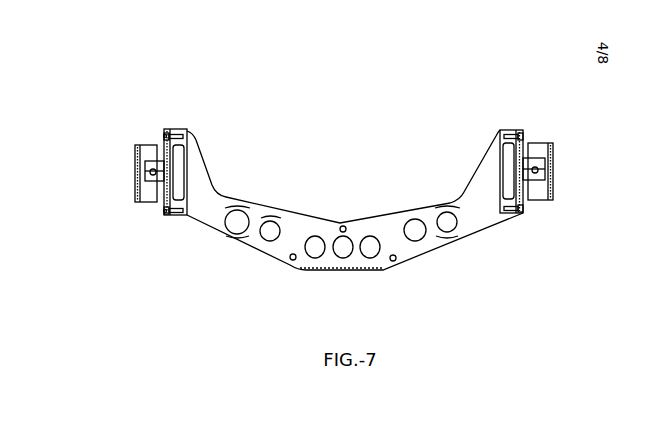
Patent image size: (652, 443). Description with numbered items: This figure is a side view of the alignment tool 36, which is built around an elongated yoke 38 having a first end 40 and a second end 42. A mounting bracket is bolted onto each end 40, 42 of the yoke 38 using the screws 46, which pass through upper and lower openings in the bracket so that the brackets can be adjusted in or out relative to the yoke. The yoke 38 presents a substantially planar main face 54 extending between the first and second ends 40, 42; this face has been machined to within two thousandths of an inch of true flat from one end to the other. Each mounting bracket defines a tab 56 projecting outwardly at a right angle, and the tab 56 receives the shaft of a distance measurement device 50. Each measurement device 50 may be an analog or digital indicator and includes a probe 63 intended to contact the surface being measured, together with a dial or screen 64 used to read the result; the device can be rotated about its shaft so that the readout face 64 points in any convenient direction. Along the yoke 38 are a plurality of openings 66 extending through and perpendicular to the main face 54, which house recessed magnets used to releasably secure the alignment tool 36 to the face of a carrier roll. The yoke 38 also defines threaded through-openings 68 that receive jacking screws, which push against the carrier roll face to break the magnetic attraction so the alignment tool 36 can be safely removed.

The alignment tool 36 is at (340, 128).
The elongated yoke 38 is at (283, 203).
The first end 40 is at (170, 132).
The second end 42 is at (512, 129).
The screws 46 is at (165, 135).
The distance measurement device 50 is at (143, 145).
The planar main face 54 is at (374, 222).
The tab 56 is at (145, 165).
The probe 63 is at (152, 174).
The dial or screen 64 is at (133, 187).
The openings 66 is at (375, 254).
The threaded through-openings 68 is at (341, 226).